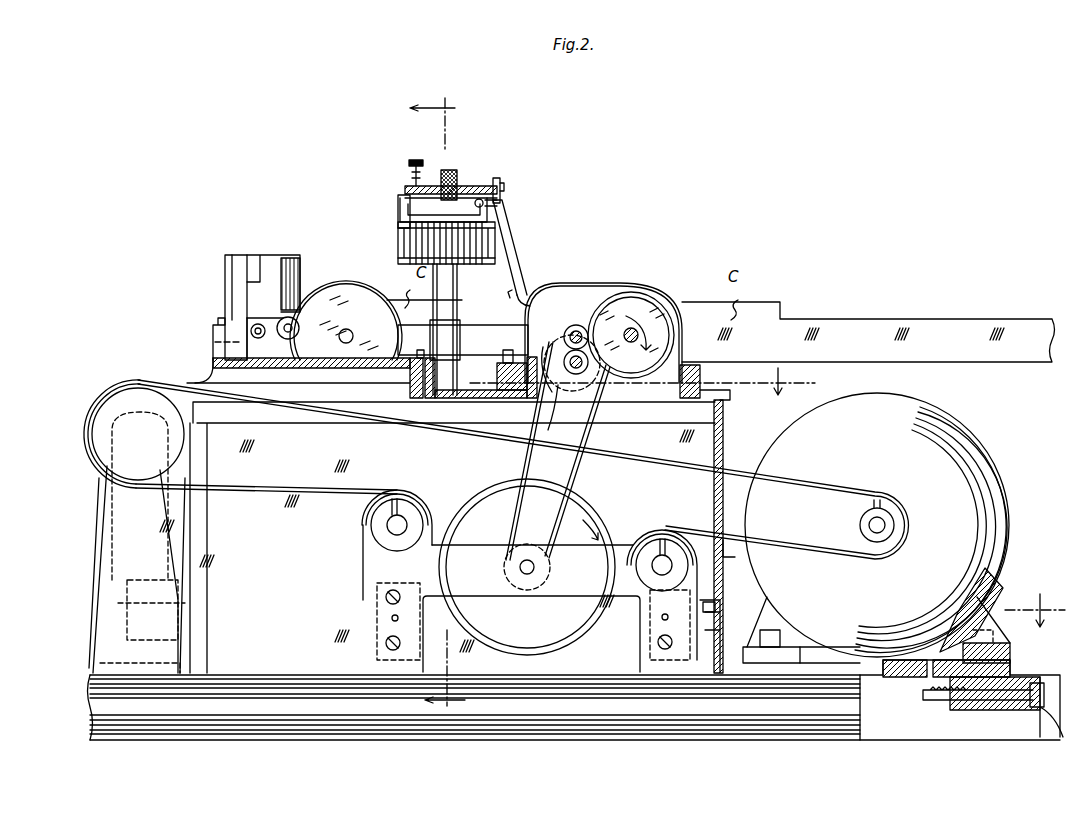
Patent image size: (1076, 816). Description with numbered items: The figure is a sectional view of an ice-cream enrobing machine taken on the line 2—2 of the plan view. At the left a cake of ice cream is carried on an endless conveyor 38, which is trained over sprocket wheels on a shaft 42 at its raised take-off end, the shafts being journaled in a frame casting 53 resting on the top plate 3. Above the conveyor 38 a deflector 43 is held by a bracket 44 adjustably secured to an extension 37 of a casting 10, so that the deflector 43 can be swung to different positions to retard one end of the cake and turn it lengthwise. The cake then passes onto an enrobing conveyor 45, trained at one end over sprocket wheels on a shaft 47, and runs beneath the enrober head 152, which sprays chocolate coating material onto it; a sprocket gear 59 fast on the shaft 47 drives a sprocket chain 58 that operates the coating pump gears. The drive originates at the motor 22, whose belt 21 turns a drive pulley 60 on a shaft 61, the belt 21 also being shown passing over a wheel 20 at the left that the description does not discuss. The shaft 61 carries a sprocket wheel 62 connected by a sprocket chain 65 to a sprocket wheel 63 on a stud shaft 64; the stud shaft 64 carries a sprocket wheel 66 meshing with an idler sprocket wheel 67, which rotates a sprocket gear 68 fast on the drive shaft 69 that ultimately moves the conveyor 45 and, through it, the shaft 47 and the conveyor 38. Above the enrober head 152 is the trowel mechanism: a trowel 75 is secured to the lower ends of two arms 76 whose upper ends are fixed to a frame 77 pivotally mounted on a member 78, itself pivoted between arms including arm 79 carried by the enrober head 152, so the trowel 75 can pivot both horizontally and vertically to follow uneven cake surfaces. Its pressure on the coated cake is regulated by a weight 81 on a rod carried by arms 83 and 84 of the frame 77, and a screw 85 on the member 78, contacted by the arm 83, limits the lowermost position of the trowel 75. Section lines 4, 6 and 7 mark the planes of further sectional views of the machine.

The section line 2 is at (722, 445).
The top plate 3 is at (722, 393).
The section line 4 is at (444, 404).
The section line 6 is at (1035, 621).
The section line 7 is at (642, 392).
The casting 10 is at (232, 346).
The pulley 20 is at (180, 432).
The belt 21 is at (392, 432).
The motor 22 is at (995, 483).
The extension 37 is at (240, 248).
The endless conveyor 38 is at (263, 312).
The shaft 42 is at (300, 326).
The deflector 43 is at (298, 270).
The bracket 44 is at (272, 255).
The enrobing conveyor 45 is at (479, 310).
The shaft 47 is at (353, 334).
The frame casting 53 is at (482, 330).
The sprocket chain 58 is at (386, 300).
The sprocket gear 59 is at (386, 290).
The drive pulley 60 is at (600, 510).
The shaft 61 is at (534, 567).
The sprocket wheel 62 is at (550, 545).
The sprocket wheel 63 is at (555, 413).
The stud shaft 64 is at (576, 372).
The sprocket chain 65 is at (585, 474).
The sprocket wheel 66 is at (549, 350).
The idler sprocket wheel 67 is at (576, 325).
The sprocket gear 68 is at (650, 305).
The drive shaft 69 is at (638, 339).
The trowel 75 is at (535, 295).
The arms 76 is at (514, 248).
The frame 77 is at (500, 200).
The member 78 is at (458, 214).
The arm 79 is at (398, 212).
The weight 81 is at (457, 172).
The arm 83 is at (410, 192).
The arm 84 is at (497, 178).
The screw 85 is at (409, 165).
The enrober head 152 is at (398, 238).